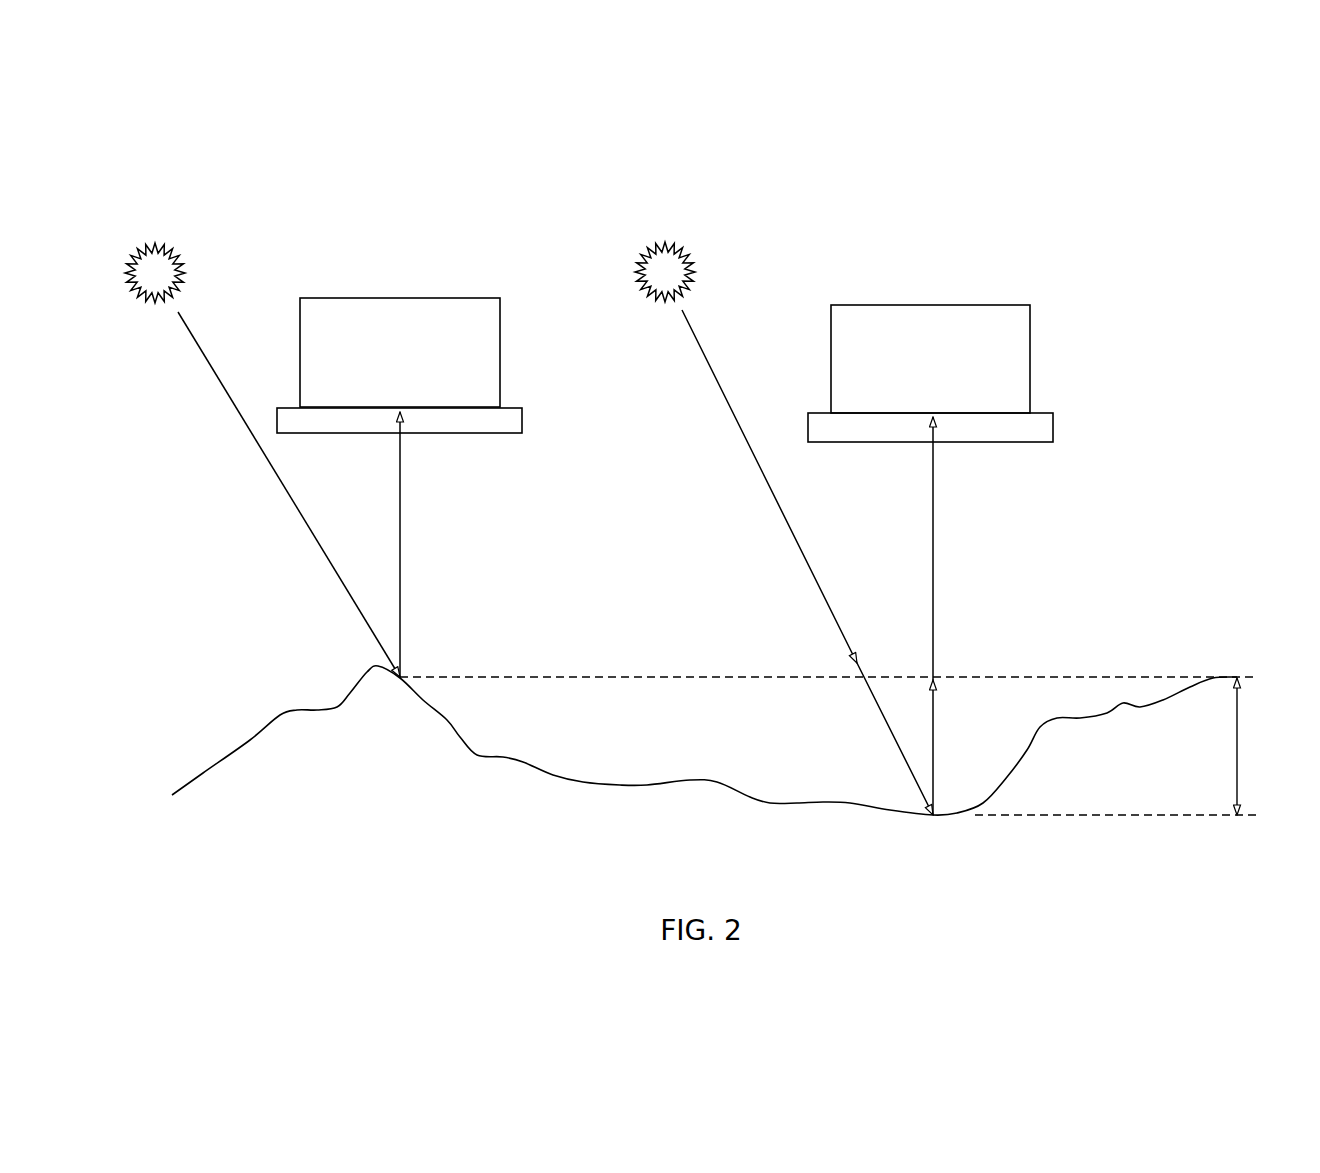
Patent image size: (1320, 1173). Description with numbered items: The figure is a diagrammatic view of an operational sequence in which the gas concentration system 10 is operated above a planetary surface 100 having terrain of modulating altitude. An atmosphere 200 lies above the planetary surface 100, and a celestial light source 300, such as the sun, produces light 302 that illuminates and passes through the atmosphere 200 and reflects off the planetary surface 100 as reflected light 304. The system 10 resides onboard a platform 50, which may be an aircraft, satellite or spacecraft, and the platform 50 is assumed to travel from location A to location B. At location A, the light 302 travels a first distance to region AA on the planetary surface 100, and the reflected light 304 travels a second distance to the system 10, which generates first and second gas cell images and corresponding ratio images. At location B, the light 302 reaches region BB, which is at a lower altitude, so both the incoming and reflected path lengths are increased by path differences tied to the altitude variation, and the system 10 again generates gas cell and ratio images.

The celestial light source 300 is at (166, 250).
The gas concentration system 10 is at (447, 298).
The platform 50 is at (522, 416).
The light 302 is at (242, 420).
The reflected light 304 is at (402, 505).
The planetary surface 100 is at (580, 777).
The atmosphere 200 is at (580, 556).